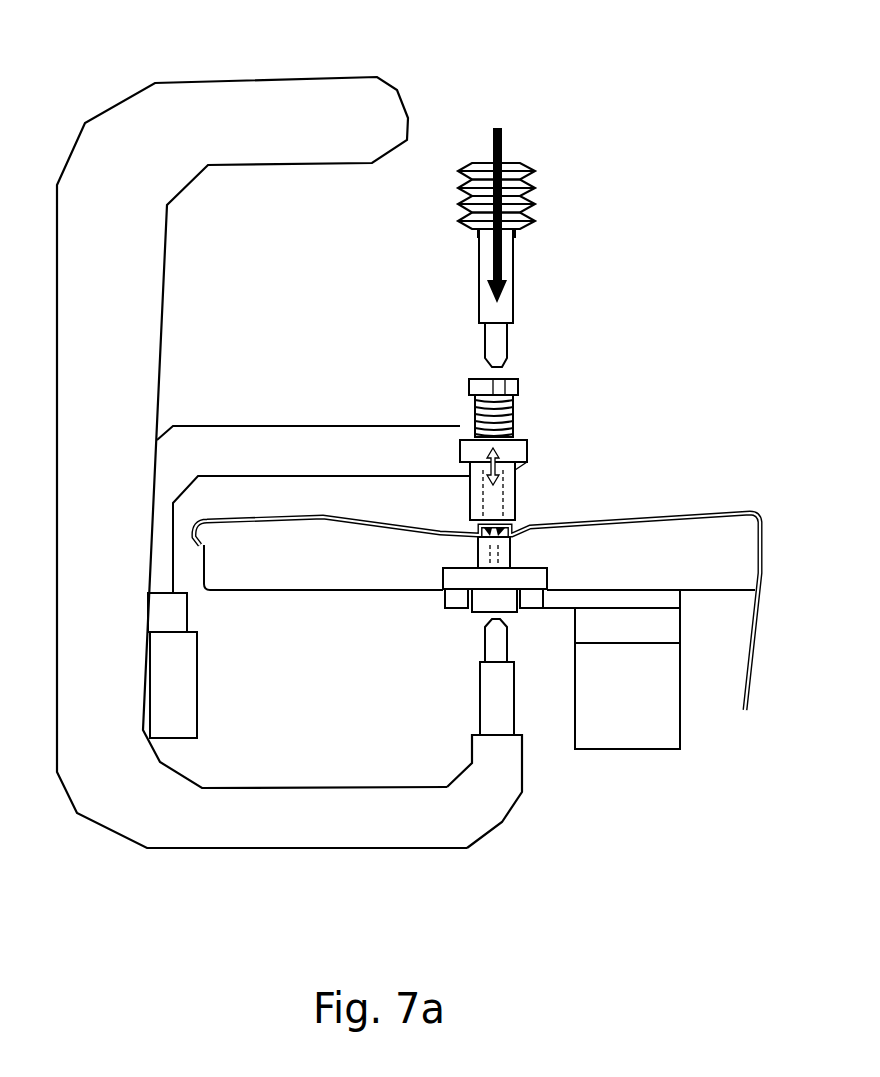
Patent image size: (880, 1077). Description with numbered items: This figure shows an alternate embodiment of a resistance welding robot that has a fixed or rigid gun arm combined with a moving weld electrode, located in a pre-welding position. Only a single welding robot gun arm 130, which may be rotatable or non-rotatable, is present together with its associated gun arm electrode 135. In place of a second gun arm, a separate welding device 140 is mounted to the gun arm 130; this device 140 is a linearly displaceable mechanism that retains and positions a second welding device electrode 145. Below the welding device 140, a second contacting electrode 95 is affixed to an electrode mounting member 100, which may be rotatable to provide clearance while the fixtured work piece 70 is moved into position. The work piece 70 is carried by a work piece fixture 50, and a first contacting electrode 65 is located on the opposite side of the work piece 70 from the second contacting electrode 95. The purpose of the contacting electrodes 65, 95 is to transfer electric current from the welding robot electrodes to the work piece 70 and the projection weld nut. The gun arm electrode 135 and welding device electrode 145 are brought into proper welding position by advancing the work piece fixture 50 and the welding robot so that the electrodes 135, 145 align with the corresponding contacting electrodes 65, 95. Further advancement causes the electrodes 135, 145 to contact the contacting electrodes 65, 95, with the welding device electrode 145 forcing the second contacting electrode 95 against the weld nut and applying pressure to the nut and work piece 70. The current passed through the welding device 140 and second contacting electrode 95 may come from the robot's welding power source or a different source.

The welding robot gun arm 130 is at (195, 77).
The welding device 140 is at (548, 168).
The welding device electrode 145 is at (512, 303).
The electrode mounting member 100 is at (230, 410).
The second contacting electrode 95 is at (520, 385).
The work piece 70 is at (667, 518).
The first contacting electrode 65 is at (540, 582).
The gun arm electrode 135 is at (482, 679).
The work piece fixture 50 is at (717, 757).